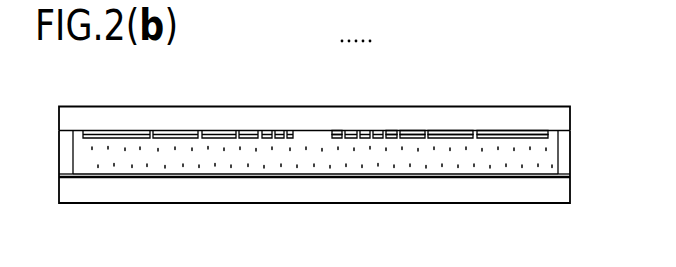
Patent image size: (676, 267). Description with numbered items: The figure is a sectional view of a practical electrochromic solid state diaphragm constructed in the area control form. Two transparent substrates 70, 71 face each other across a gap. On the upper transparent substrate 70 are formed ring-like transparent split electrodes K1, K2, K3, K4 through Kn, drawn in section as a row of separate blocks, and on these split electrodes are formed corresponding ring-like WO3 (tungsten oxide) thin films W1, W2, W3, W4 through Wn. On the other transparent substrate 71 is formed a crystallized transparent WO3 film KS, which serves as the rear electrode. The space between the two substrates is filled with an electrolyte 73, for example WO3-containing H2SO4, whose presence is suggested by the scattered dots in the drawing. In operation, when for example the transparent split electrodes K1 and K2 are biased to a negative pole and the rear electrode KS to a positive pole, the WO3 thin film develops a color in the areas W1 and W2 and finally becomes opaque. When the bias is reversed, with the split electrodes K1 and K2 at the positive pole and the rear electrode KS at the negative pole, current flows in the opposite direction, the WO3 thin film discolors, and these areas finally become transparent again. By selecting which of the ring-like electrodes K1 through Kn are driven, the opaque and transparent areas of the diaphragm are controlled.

The transparent substrate 70 is at (538, 118).
The transparent substrate 71 is at (518, 192).
The electrolyte 73 is at (335, 168).
The crystallized transparent WO3 film KS is at (405, 175).
The transparent split electrode Kn is at (338, 131).
The transparent split electrode K4 is at (386, 131).
The transparent split electrode K3 is at (413, 131).
The transparent split electrode K2 is at (448, 131).
The transparent split electrode K1 is at (490, 131).
The WO3 thin film Wn is at (340, 134).
The WO3 thin film W4 is at (390, 134).
The WO3 thin film W3 is at (423, 134).
The WO3 thin film W2 is at (460, 134).
The WO3 thin film W1 is at (502, 134).